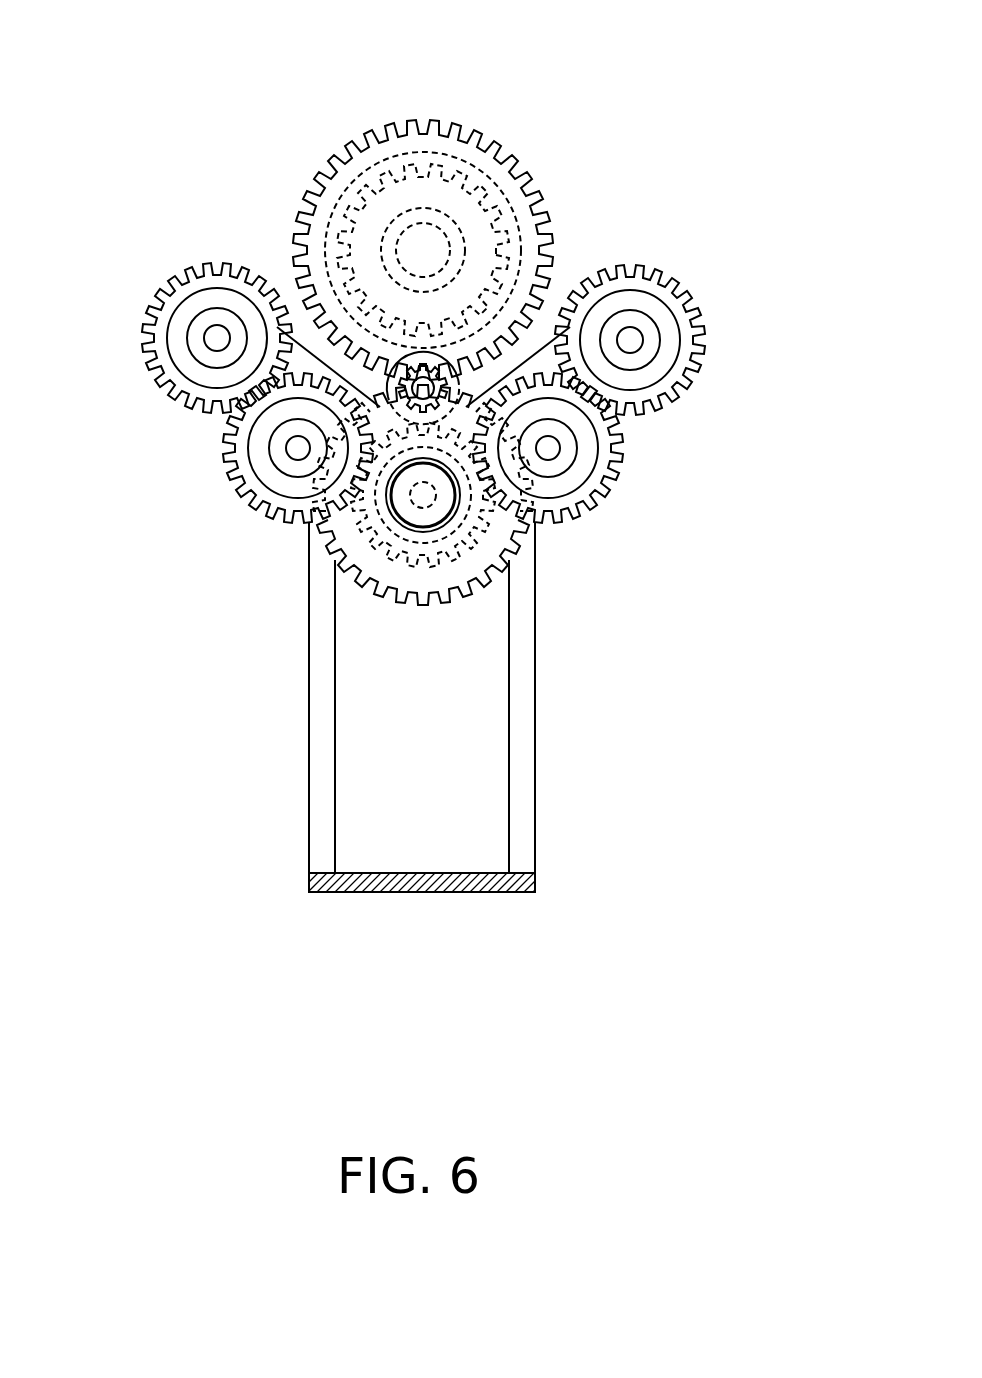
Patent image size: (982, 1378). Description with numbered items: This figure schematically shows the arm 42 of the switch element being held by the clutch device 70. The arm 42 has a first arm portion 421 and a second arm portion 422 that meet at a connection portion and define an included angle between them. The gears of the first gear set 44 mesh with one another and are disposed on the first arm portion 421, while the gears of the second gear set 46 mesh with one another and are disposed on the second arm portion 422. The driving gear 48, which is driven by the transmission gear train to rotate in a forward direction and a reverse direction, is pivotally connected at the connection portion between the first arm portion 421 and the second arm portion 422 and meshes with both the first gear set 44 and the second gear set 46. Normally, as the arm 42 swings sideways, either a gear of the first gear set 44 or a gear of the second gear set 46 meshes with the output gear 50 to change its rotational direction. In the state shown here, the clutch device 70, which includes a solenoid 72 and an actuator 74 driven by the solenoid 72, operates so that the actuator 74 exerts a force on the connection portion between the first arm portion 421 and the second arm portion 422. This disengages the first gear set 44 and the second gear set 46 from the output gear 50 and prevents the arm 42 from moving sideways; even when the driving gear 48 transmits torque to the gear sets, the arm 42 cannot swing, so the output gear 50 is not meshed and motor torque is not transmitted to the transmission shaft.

The arm 42 is at (318, 357).
The first gear set 44 is at (163, 278).
The second gear set 46 is at (692, 290).
The driving gear 48 is at (417, 583).
The output gear 50 is at (452, 143).
The clutch device 70 is at (552, 615).
The solenoid 72 is at (485, 781).
The actuator 74 is at (377, 383).
The first arm portion 421 is at (297, 362).
The second arm portion 422 is at (548, 365).